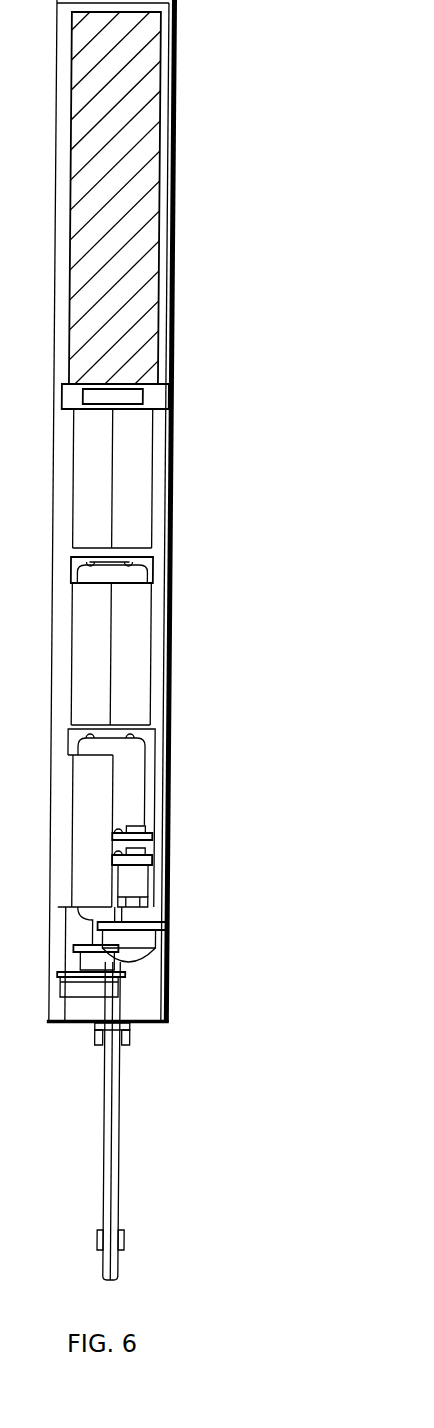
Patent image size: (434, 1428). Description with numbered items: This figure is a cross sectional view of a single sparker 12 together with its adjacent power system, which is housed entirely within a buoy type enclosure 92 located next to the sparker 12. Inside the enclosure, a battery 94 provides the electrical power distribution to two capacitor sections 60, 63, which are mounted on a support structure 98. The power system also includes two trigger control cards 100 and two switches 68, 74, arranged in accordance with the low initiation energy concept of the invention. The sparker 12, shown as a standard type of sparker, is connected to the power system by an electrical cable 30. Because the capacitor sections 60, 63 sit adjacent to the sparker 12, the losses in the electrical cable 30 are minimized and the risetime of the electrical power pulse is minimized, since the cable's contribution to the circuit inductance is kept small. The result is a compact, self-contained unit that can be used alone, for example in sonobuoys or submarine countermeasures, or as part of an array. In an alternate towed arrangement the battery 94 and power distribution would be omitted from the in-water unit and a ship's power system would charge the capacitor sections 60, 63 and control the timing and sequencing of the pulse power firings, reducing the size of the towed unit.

The battery 94 is at (147, 64).
The buoy type enclosure 92 is at (148, 396).
The capacitor section 60 is at (184, 578).
The capacitor section 63 is at (152, 597).
The support structure 98 is at (170, 697).
The trigger control card 100 is at (150, 850).
The switch 68 is at (170, 951).
The switch 74 is at (165, 956).
The electrical cable 30 is at (120, 1133).
The sparker 12 is at (140, 1248).